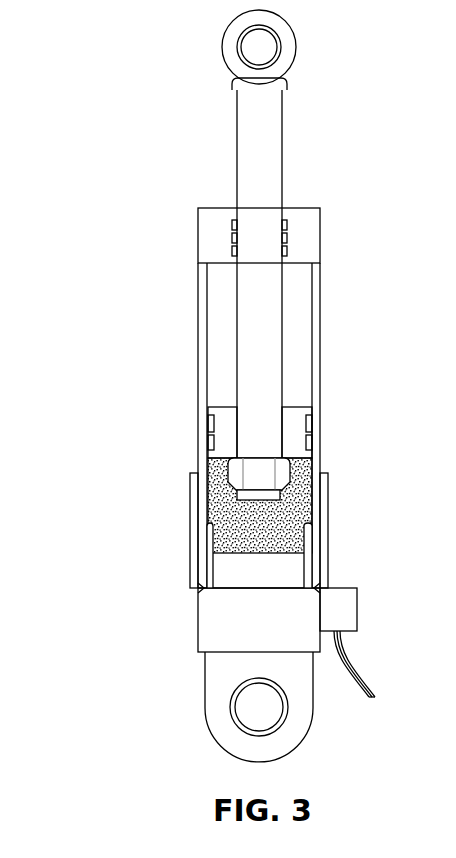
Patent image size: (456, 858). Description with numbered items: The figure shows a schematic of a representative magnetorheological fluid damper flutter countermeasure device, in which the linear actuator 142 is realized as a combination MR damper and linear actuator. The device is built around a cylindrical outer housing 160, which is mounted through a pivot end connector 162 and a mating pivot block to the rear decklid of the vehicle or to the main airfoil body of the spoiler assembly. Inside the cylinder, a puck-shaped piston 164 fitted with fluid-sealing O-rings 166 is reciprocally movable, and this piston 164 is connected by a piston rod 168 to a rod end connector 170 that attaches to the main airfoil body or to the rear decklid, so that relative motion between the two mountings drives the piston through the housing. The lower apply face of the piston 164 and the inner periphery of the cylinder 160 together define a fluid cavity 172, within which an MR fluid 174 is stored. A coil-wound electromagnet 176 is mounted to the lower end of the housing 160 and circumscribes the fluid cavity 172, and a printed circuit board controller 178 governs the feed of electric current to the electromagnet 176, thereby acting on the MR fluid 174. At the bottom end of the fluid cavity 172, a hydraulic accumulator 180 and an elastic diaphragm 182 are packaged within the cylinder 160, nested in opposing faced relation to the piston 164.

The linear actuator 142 is at (146, 103).
The cylindrical outer housing 160 is at (198, 240).
The pivot end connector 162 is at (206, 712).
The piston 164 is at (198, 372).
The fluid-sealing O-rings 166 is at (308, 422).
The piston rod 168 is at (237, 155).
The rod end connector 170 is at (222, 38).
The fluid cavity 172 is at (226, 464).
The MR fluid 174 is at (300, 498).
The coil-wound electromagnet 176 is at (190, 477).
The printed circuit board controller 178 is at (357, 605).
The hydraulic accumulator 180 is at (304, 567).
The elastic diaphragm 182 is at (207, 563).